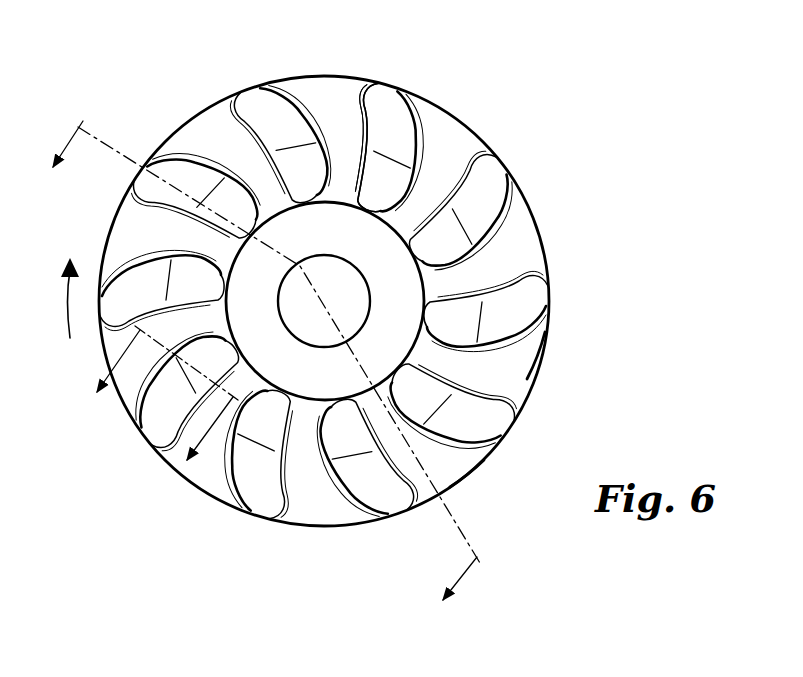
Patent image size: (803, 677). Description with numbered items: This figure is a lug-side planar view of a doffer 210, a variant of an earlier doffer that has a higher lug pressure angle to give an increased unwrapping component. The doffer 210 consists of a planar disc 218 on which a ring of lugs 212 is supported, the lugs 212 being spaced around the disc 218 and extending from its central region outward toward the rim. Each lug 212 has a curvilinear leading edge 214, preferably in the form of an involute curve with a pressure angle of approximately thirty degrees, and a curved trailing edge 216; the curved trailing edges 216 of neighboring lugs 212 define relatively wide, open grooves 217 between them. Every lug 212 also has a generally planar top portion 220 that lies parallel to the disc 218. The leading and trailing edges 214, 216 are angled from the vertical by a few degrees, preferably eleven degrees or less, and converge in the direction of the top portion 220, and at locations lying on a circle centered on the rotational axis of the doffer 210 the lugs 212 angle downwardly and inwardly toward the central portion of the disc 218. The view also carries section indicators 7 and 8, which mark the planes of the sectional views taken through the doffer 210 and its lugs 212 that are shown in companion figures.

The doffer 210 is at (541, 243).
The lugs 212 is at (260, 97).
The leading edge 214 is at (420, 130).
The trailing edge 216 is at (363, 118).
The grooves 217 is at (524, 355).
The planar disc 218 is at (266, 289).
The top portion 220 is at (490, 192).
The section line 7- 7 is at (260, 381).
The section line 8- 8 is at (159, 415).